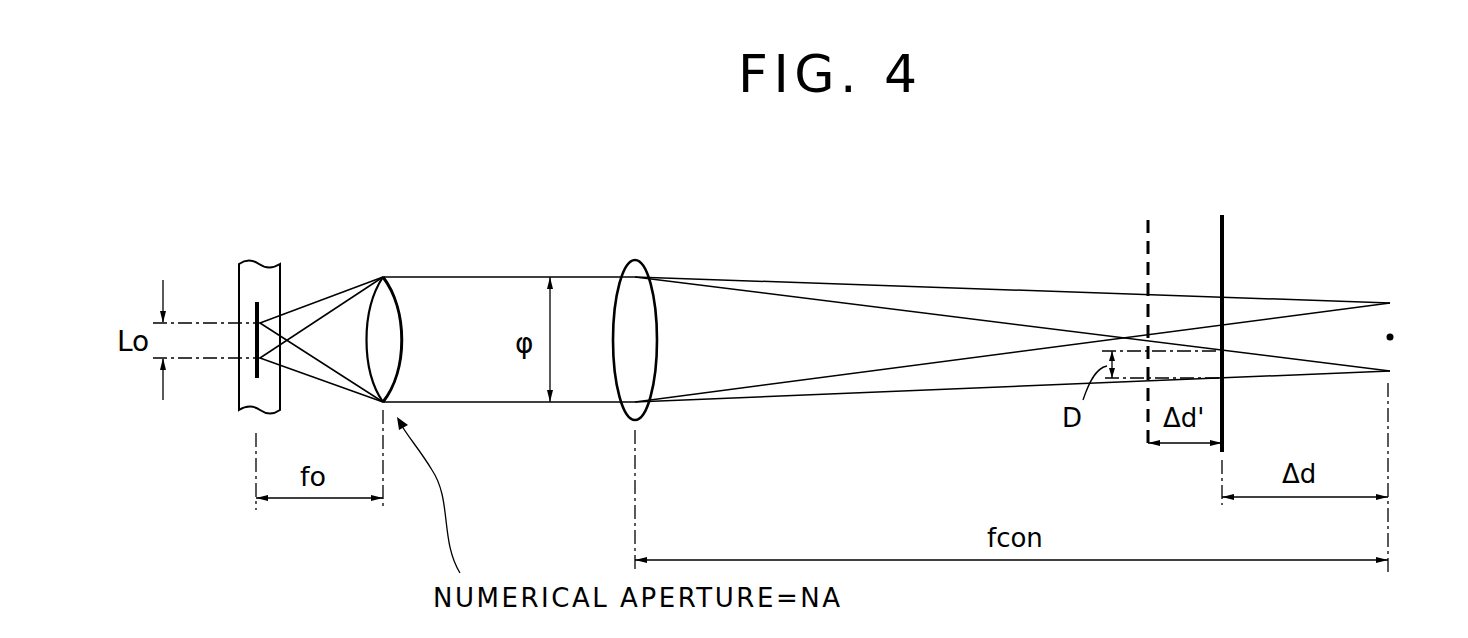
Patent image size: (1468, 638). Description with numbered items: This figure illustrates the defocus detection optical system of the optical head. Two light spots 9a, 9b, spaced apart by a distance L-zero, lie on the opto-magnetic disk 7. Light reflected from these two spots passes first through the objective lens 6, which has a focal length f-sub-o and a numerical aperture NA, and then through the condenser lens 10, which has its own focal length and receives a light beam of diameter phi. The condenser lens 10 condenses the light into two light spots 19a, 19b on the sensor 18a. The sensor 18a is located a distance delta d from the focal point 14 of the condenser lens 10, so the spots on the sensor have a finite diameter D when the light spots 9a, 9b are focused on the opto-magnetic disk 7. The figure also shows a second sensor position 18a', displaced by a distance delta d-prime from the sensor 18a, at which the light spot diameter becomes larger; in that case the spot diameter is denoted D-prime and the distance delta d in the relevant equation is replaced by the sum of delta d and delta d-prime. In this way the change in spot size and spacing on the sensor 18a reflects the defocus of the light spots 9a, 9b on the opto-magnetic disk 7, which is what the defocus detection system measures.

The opto-magnetic disk 7 is at (282, 285).
The light spot 9a is at (252, 322).
The light spot 9b is at (257, 360).
The objective lens 6 is at (393, 270).
The condenser lens 10 is at (637, 265).
The sensor 18a' is at (1096, 295).
The sensor 18a is at (1270, 296).
The light spot 19b is at (1227, 313).
The light spot 19a is at (1228, 360).
The focal point 14 is at (1390, 337).